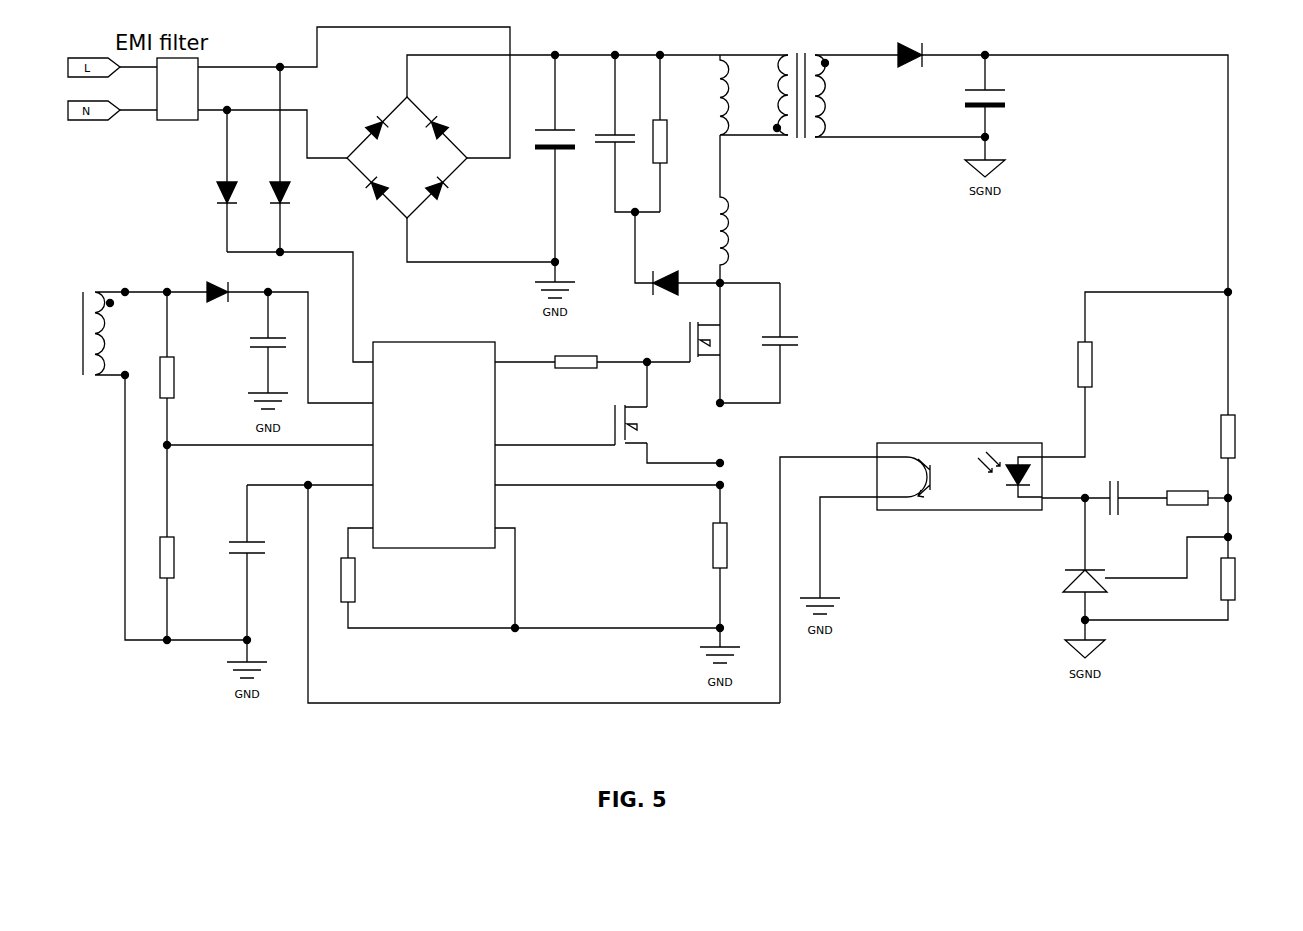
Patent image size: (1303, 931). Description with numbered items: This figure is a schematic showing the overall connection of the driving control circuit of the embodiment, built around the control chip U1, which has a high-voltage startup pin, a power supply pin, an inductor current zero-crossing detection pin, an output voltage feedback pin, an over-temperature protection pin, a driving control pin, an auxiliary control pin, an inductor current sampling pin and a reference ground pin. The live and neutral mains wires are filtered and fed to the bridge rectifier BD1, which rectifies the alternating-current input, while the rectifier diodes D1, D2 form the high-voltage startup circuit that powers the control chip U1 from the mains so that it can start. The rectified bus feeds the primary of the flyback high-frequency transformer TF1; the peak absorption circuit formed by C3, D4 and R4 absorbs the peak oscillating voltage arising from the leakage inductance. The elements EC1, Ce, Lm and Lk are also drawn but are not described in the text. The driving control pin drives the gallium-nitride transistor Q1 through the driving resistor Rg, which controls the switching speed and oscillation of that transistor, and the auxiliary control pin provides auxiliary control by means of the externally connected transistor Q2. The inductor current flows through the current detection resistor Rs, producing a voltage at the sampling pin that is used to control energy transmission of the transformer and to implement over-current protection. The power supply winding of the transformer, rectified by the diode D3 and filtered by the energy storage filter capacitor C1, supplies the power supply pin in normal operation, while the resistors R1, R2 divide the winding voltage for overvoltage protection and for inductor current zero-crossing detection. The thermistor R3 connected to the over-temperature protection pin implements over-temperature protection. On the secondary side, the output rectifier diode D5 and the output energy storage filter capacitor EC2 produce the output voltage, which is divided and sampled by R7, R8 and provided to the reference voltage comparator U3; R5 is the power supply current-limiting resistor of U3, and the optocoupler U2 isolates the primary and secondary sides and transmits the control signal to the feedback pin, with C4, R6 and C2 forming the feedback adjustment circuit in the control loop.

The rectifier diode D1 is at (212, 181).
The rectifier diode D2 is at (298, 159).
The rectifier diode for the power supply winding D3 is at (223, 282).
The peak absorption diode D4 is at (707, 253).
The output rectifier diode D5 is at (1063, 152).
The bridge rectifier BD1 is at (407, 153).
The bulk electrolytic capacitor EC1 is at (544, 158).
The output energy storage filter capacitor EC2 is at (1006, 96).
The energy storage filter capacitor C1 is at (254, 342).
The feedback adjustment capacitor C2 is at (255, 562).
The peak absorption capacitor C3 is at (627, 133).
The feedback adjustment capacitor C4 is at (1137, 487).
The capacitor Ce is at (771, 343).
The voltage dividing resistor R1 is at (180, 414).
The voltage dividing resistor R2 is at (181, 588).
The thermistor R3 is at (530, 578).
The peak absorption resistor R4 is at (672, 133).
The power supply current-limiting resistor R5 is at (1135, 374).
The feedback adjustment resistor R6 is at (1197, 482).
The output voltage dividing resistor R7 is at (1243, 425).
The output voltage dividing resistor R8 is at (1172, 589).
The driving resistor Rg is at (592, 352).
The current detection resistor Rs is at (732, 556).
The magnetizing inductance Lm is at (739, 95).
The leakage inductance Lk is at (738, 209).
The flyback high-frequency transformer TF1 is at (801, 79).
The control chip U1 is at (434, 436).
The optocoupler U2 is at (959, 462).
The reference voltage comparator U3 is at (1064, 559).
The GaN transistor Q1 is at (689, 343).
The transistor Q2 is at (649, 412).